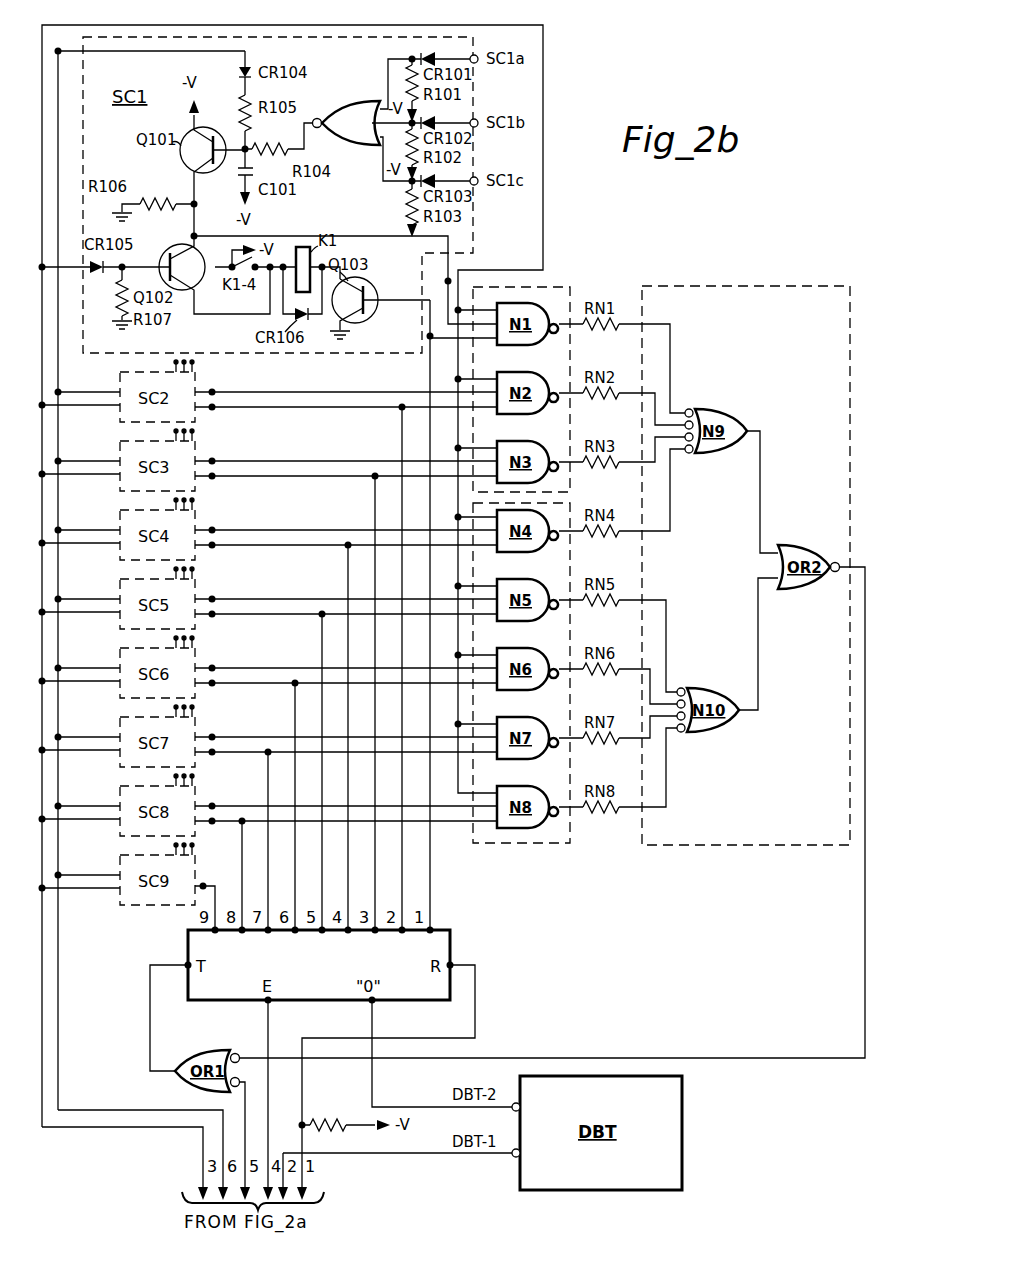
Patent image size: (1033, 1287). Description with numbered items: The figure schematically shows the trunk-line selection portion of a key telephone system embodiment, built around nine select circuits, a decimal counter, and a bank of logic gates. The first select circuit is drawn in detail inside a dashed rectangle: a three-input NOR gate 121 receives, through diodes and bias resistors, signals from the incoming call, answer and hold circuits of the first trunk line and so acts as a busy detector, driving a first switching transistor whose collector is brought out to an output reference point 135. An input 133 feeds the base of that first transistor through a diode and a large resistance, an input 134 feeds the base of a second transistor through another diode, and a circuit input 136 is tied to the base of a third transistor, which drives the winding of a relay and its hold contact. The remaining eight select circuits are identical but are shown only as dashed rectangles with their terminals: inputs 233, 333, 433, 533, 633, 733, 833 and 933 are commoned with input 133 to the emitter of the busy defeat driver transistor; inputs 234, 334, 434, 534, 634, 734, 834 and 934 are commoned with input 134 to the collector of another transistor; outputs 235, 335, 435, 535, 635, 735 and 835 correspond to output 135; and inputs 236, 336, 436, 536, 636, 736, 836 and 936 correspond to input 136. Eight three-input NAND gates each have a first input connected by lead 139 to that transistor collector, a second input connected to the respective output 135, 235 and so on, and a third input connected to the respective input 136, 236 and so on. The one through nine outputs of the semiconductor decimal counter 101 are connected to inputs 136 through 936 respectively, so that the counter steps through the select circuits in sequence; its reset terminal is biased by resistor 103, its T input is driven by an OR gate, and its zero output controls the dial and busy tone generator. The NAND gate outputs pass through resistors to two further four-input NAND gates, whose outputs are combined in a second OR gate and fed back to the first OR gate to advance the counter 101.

The semiconductor decimal counter 101 is at (319, 965).
The bias resistor 103 is at (326, 1119).
The three-input NOR gate 121 is at (363, 120).
The input of select circuit SC1 133 is at (60, 53).
The input of select circuit SC1 134 is at (45, 270).
The output reference point of select circuit SC1 135 is at (445, 281).
The circuit input of select circuit SC1 136 is at (427, 337).
The lead 139 is at (545, 62).
The input of select circuit SC2 233 is at (60, 391).
The input of select circuit SC2 234 is at (45, 406).
The output terminal of select circuit SC2 235 is at (212, 391).
The input of select circuit SC2 236 is at (212, 408).
The input of select circuit SC3 333 is at (60, 460).
The input of select circuit SC3 334 is at (45, 475).
The output terminal of select circuit SC3 335 is at (212, 460).
The input of select circuit SC3 336 is at (212, 477).
The input of select circuit SC4 433 is at (60, 529).
The input of select circuit SC4 434 is at (45, 544).
The output terminal of select circuit SC4 435 is at (212, 529).
The input of select circuit SC4 436 is at (212, 546).
The input of select circuit SC5 533 is at (60, 598).
The input of select circuit SC5 534 is at (45, 613).
The output terminal of select circuit SC5 535 is at (212, 598).
The input of select circuit SC5 536 is at (212, 615).
The input of select circuit SC6 633 is at (60, 667).
The input of select circuit SC6 634 is at (45, 682).
The output terminal of select circuit SC6 635 is at (212, 667).
The input of select circuit SC6 636 is at (212, 684).
The input of select circuit SC7 733 is at (60, 736).
The input of select circuit SC7 734 is at (45, 751).
The output terminal of select circuit SC7 735 is at (212, 736).
The input of select circuit SC7 736 is at (212, 753).
The input of select circuit SC8 833 is at (60, 805).
The input of select circuit SC8 834 is at (45, 820).
The output terminal of select circuit SC8 835 is at (212, 805).
The input of select circuit SC8 836 is at (212, 822).
The input of select circuit SC9 933 is at (60, 874).
The input of select circuit SC9 934 is at (45, 889).
The input of select circuit SC9 936 is at (203, 885).